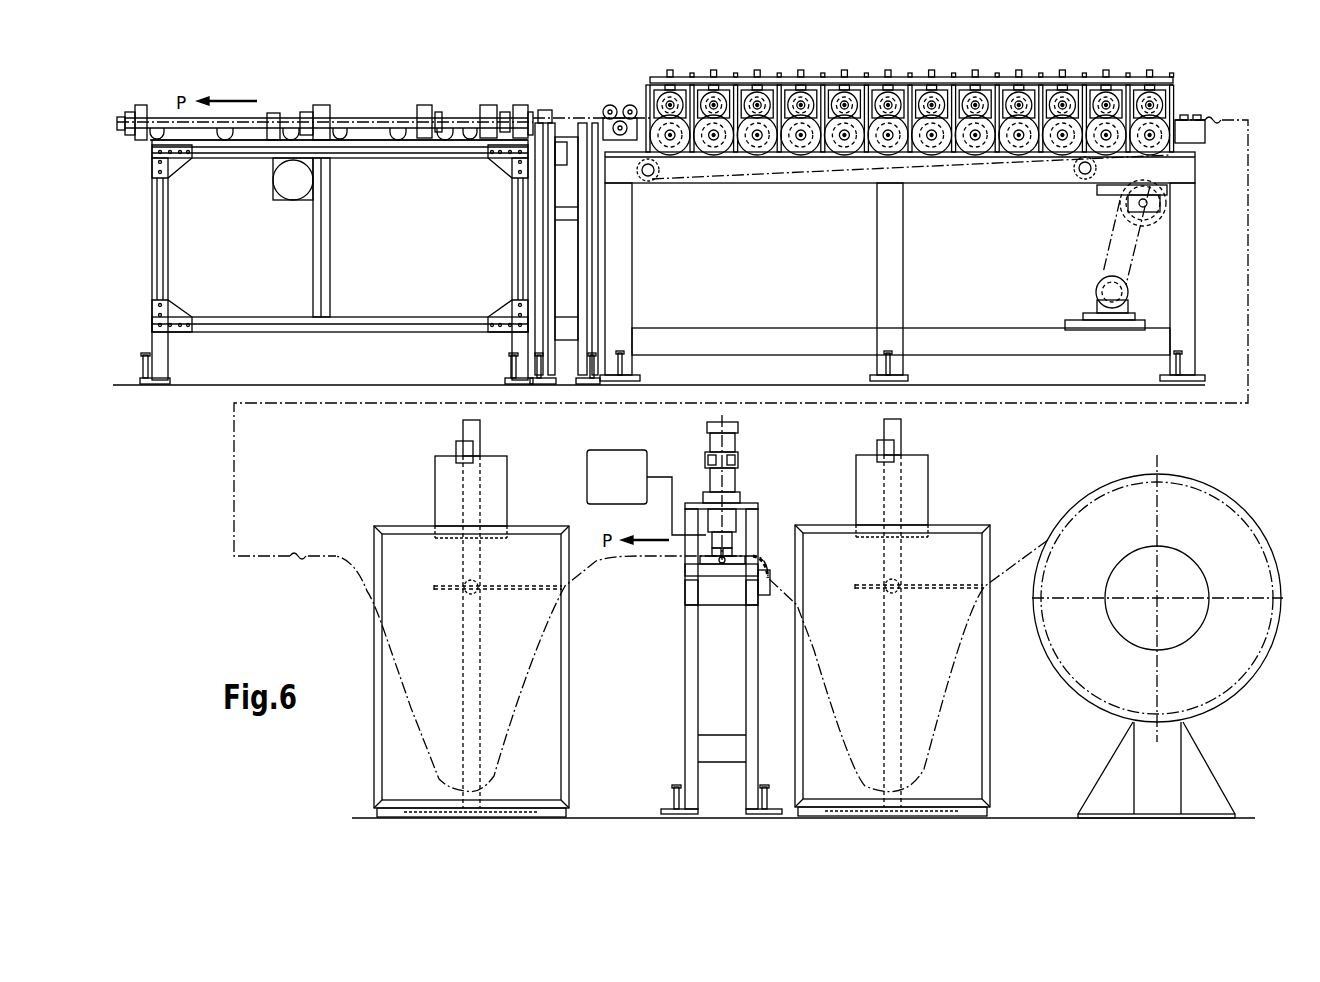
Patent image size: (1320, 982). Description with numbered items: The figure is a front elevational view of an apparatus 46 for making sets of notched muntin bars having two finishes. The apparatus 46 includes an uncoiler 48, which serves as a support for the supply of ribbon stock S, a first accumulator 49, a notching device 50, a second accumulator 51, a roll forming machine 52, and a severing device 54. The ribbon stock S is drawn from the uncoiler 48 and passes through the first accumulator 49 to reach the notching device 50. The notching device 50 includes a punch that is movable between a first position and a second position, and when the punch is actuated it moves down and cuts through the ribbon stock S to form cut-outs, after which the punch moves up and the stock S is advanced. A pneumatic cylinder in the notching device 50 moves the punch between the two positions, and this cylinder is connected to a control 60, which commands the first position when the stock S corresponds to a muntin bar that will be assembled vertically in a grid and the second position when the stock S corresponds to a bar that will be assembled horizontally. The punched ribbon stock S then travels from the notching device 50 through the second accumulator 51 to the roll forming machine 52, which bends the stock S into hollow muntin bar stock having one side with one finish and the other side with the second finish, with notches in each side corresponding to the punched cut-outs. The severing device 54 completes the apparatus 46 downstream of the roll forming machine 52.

The apparatus 46 is at (587, 75).
The uncoiler 48 is at (1252, 490).
The first accumulator 49 is at (947, 458).
The notching device 50 is at (755, 482).
The second accumulator 51 is at (417, 482).
The roll forming machine 52 is at (1203, 68).
The severing device 54 is at (566, 97).
The control 60 is at (625, 450).
The ribbon stock S is at (1022, 556).